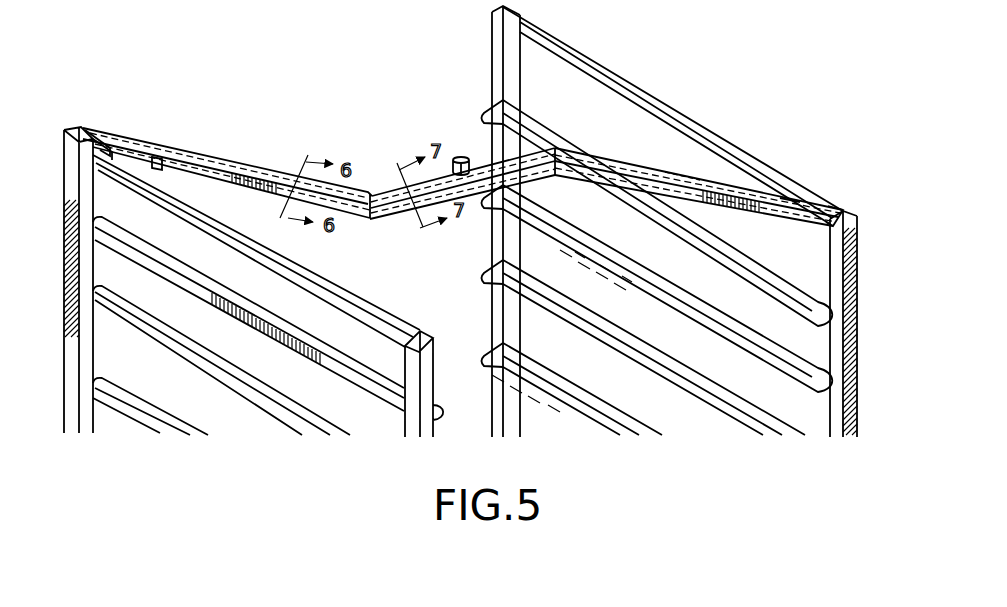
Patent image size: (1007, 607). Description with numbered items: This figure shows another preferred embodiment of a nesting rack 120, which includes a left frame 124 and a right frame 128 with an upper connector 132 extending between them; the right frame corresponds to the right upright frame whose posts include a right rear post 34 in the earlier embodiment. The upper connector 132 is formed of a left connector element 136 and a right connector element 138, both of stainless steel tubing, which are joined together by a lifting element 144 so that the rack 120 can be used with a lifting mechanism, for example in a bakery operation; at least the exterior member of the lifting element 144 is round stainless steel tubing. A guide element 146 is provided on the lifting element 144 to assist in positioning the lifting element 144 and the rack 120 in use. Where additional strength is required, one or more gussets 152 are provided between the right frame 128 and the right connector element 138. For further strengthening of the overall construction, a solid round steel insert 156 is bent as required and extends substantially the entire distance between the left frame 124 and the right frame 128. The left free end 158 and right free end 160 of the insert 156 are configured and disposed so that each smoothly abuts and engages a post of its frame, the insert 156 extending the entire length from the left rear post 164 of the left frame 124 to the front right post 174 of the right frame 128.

The right rear post 34 is at (497, 52).
The nesting rack 120 is at (355, 73).
The left frame 124 is at (62, 158).
The right frame 128 is at (613, 65).
The upper connector 132 is at (227, 150).
The left connector element 136 is at (230, 160).
The right connector element 138 is at (770, 190).
The lifting element 144 is at (393, 218).
The guide element 146 is at (454, 158).
The gusset 152 is at (790, 192).
The solid round steel insert 156 is at (668, 172).
The left free end 158 is at (108, 128).
The right free end 160 is at (830, 190).
The left rear post 164 is at (62, 262).
The front right post 174 is at (832, 243).